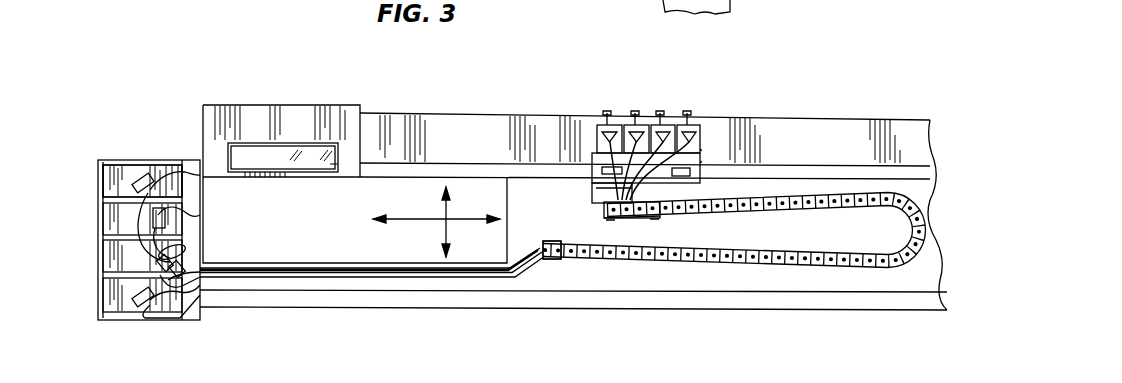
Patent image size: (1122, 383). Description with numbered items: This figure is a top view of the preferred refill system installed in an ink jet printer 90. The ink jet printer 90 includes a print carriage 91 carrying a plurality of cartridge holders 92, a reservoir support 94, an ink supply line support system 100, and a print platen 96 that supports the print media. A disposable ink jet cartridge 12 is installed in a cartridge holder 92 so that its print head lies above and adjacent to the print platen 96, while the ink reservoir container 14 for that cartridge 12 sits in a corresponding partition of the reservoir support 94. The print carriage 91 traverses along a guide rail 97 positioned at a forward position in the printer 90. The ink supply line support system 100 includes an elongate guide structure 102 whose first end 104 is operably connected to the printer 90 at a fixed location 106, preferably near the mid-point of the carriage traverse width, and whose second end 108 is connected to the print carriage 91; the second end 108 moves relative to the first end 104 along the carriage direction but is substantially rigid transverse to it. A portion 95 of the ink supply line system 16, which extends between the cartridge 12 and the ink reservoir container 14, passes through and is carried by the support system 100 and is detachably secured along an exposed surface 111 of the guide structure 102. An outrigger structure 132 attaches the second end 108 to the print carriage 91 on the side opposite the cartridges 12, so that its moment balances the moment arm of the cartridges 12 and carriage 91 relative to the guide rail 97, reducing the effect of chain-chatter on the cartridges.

The disposable ink jet cartridge 12 is at (697, 127).
The ink reservoir container 14 is at (115, 318).
The ink supply line system 16 is at (500, 277).
The ink jet printer 90 is at (401, 317).
The print carriage 91 is at (703, 162).
The cartridge holder 92 is at (700, 150).
The reservoir support 94 is at (127, 160).
The portion of ink supply line system 95 is at (782, 258).
The print platen 96 is at (843, 127).
The guide rail 97 is at (855, 175).
The ink supply line support system 100 is at (700, 265).
The elongate guide structure 102 is at (825, 263).
The first end 104 is at (630, 258).
The fixed location 106 is at (563, 253).
The second end 108 is at (598, 206).
The exposed surface 111 is at (912, 224).
The outrigger structure 132 is at (592, 188).